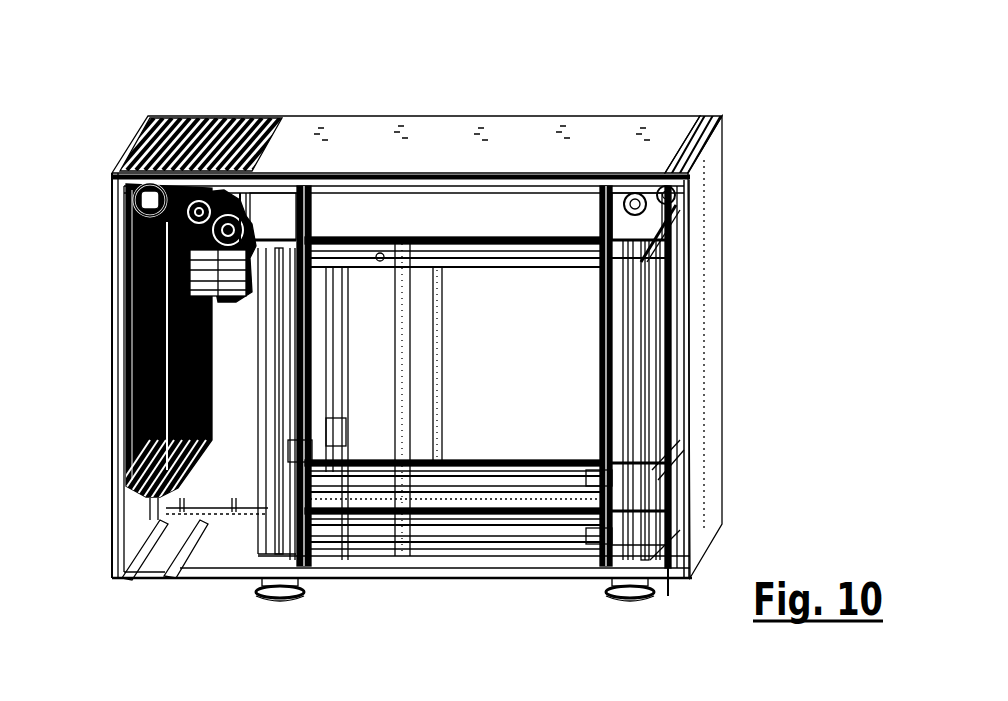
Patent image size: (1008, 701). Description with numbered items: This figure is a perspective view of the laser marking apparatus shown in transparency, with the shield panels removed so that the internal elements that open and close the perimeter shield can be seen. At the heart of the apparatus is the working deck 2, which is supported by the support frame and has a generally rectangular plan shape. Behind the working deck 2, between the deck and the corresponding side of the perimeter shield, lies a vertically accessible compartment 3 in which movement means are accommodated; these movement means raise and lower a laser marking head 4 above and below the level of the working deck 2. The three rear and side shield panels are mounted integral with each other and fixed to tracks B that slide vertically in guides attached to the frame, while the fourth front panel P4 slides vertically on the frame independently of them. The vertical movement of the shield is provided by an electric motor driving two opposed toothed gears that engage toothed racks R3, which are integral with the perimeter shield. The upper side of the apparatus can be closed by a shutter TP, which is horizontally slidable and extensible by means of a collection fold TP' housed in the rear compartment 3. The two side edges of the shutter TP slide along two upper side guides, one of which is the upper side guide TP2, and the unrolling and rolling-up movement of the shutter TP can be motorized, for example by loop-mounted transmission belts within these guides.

The working deck 2 is at (352, 146).
The shutter TP is at (208, 102).
The upper side guide TP2 is at (586, 190).
The collection fold TP' is at (125, 342).
The front panel P4 is at (712, 306).
The tracks B is at (312, 210).
The toothed racks R3 is at (444, 325).
The laser marking head 4 is at (220, 276).
The compartment 3 is at (222, 492).